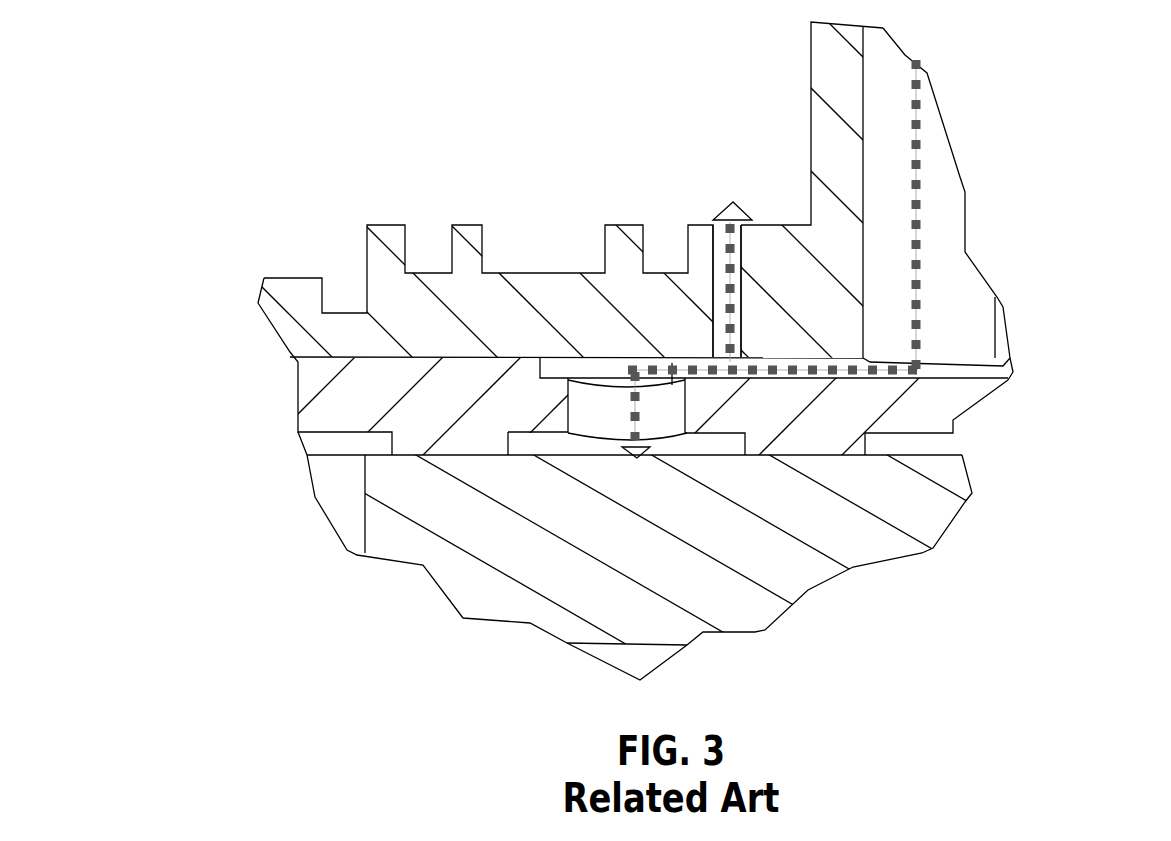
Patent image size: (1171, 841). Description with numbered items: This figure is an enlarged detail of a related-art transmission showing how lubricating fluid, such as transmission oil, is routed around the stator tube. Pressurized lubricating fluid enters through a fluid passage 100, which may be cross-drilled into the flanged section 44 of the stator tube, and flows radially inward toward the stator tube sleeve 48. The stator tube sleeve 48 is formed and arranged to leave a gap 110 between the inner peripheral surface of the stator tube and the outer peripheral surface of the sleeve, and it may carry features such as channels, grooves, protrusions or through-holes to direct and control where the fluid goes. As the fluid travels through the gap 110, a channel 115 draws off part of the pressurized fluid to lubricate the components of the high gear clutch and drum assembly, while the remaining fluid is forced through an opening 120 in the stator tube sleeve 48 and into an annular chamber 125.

The flanged section 44 is at (832, 83).
The fluid passage 100 is at (950, 210).
The gap 110 is at (842, 370).
The channel 115 is at (720, 322).
The opening 120 is at (609, 381).
The annular chamber 125 is at (543, 443).
The stator tube sleeve 48 is at (932, 405).